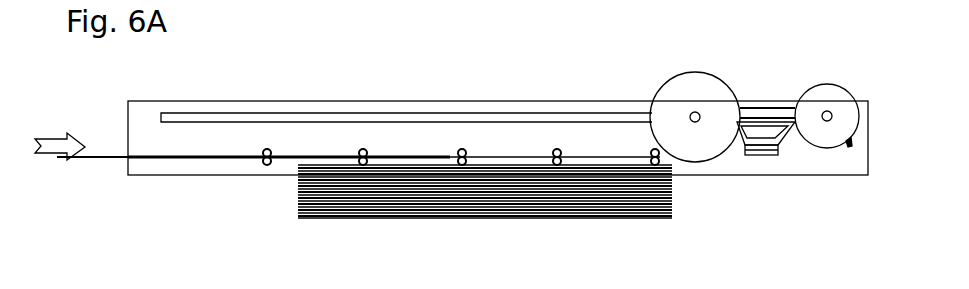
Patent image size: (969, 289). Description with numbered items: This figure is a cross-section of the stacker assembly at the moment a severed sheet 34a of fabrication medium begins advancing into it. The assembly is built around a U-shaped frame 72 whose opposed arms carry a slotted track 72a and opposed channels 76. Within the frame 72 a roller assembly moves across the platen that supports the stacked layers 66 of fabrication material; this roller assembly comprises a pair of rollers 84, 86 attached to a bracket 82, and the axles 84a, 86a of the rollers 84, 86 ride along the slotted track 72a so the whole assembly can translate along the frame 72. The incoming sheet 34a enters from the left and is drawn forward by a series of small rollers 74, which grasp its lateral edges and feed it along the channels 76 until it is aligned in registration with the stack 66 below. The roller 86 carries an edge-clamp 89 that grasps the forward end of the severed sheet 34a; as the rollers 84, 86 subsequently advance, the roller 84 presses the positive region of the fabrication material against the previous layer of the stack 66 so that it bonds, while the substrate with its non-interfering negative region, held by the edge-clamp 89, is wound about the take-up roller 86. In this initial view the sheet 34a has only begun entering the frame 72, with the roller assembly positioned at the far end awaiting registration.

The U-shaped frame 72 is at (128, 101).
The slotted track 72a is at (248, 112).
The sheet 34a is at (113, 161).
The small rollers 74 is at (267, 167).
The channels 76 is at (292, 163).
The stacked layers 66 is at (470, 218).
The roller 84 is at (672, 76).
The axle 84a is at (697, 112).
The roller 86 is at (818, 84).
The axle 86a is at (825, 111).
The bracket 82 is at (765, 157).
The edge-clamp 89 is at (852, 148).